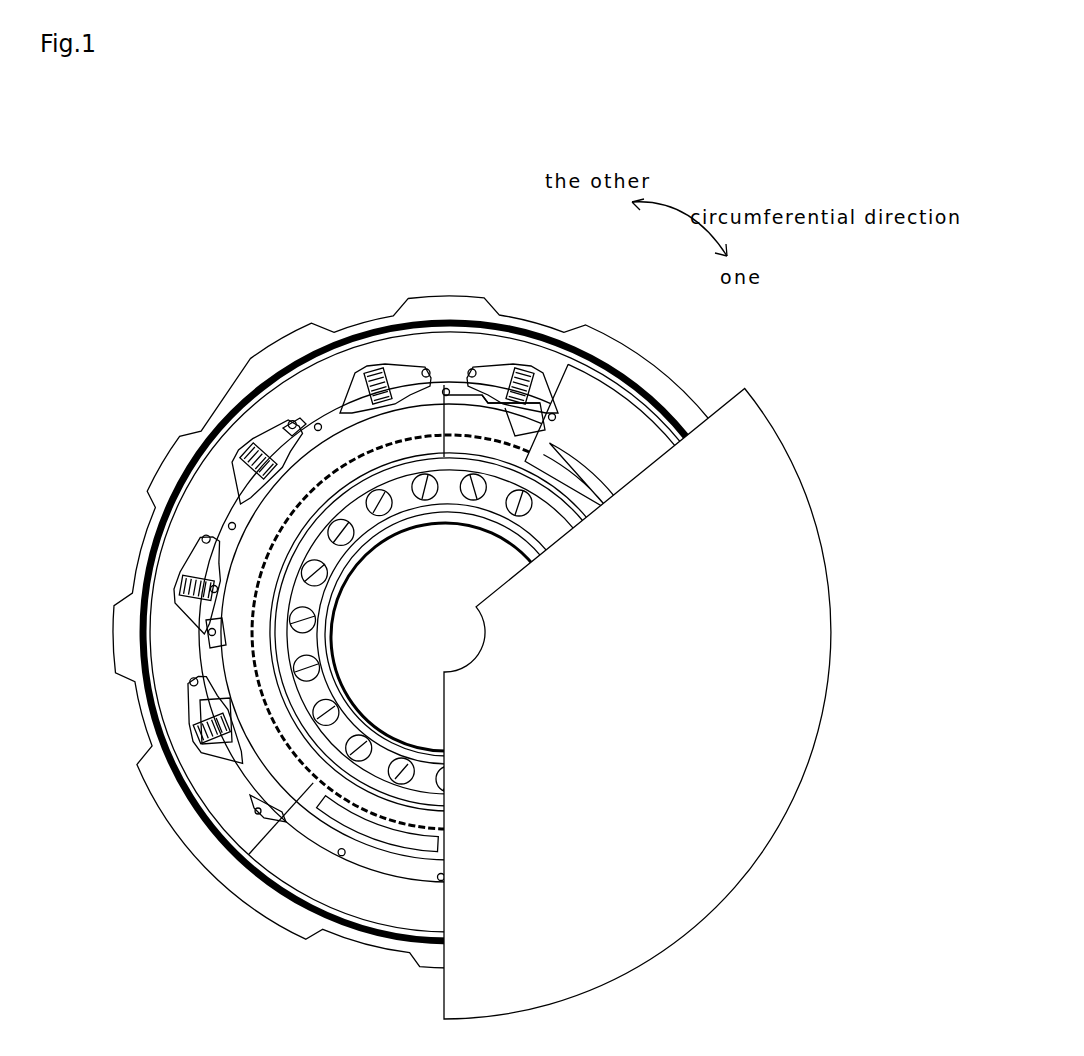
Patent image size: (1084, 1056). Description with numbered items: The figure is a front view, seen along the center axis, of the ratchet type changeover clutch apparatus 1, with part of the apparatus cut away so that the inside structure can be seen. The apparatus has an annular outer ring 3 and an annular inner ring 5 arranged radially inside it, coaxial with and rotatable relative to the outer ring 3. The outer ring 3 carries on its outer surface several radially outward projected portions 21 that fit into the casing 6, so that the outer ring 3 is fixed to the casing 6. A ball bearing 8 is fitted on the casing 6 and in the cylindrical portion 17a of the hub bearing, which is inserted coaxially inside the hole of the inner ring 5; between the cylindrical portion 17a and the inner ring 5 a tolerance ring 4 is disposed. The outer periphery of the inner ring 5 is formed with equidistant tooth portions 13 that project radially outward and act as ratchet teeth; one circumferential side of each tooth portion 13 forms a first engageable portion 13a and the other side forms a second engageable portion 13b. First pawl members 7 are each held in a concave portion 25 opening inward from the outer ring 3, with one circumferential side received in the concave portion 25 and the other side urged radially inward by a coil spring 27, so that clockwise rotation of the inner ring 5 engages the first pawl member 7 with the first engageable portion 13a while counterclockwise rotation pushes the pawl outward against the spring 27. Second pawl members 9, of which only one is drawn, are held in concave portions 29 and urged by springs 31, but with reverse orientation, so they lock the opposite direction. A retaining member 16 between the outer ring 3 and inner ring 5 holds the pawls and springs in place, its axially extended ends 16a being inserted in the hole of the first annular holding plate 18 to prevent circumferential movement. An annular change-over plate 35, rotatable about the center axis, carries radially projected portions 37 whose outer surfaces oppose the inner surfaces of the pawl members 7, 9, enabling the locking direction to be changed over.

The ratchet type changeover clutch apparatus 1 is at (450, 210).
The outer ring 3 is at (428, 345).
The tolerance ring 4 is at (232, 443).
The inner ring 5 is at (238, 592).
The casing 6 is at (752, 452).
The first pawl member 7 is at (275, 460).
The ball bearing 8 is at (330, 778).
The second pawl member 9 is at (485, 403).
The tooth portion 13 is at (205, 685).
The first engageable portion 13a is at (232, 560).
The second engageable portion 13b is at (215, 628).
The retaining member 16 is at (262, 538).
The axially extended end 16a is at (315, 422).
The cylindrical portion 17a is at (257, 650).
The first annular holding plate 18 is at (610, 417).
The projected portion 21 is at (277, 352).
The concave portion 25 is at (290, 432).
The coil spring 27 is at (370, 372).
The concave portion 29 is at (462, 393).
The spring 31 is at (526, 378).
The change-over plate 35 is at (252, 800).
The projected portion 37 is at (222, 757).